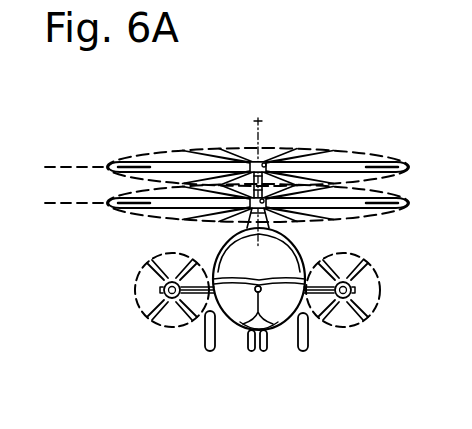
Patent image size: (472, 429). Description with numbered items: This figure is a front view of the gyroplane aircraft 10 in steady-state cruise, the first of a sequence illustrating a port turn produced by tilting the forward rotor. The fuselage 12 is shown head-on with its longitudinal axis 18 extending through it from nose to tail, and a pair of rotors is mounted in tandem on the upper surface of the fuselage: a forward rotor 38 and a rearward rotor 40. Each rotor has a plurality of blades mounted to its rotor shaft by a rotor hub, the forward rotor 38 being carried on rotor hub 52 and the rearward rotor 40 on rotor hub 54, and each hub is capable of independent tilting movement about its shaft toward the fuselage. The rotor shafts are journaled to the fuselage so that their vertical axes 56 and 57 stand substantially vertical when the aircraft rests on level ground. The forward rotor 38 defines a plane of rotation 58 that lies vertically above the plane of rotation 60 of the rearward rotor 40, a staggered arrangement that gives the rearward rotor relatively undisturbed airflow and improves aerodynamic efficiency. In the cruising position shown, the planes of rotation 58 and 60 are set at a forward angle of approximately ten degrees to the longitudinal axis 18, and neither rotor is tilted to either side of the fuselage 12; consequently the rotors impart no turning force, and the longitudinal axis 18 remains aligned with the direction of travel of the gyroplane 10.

The aircraft 10 is at (355, 86).
The fuselage 12 is at (308, 253).
The longitudinal axis 18 is at (262, 292).
The forward rotor 38 is at (143, 146).
The rearward rotor 40 is at (140, 227).
The rotor hub 52 is at (252, 162).
The rotor hub 54 is at (263, 200).
The vertical axis 56 is at (259, 122).
The vertical axis 57 is at (265, 162).
The plane of rotation 58 is at (72, 163).
The plane of rotation 60 is at (72, 206).